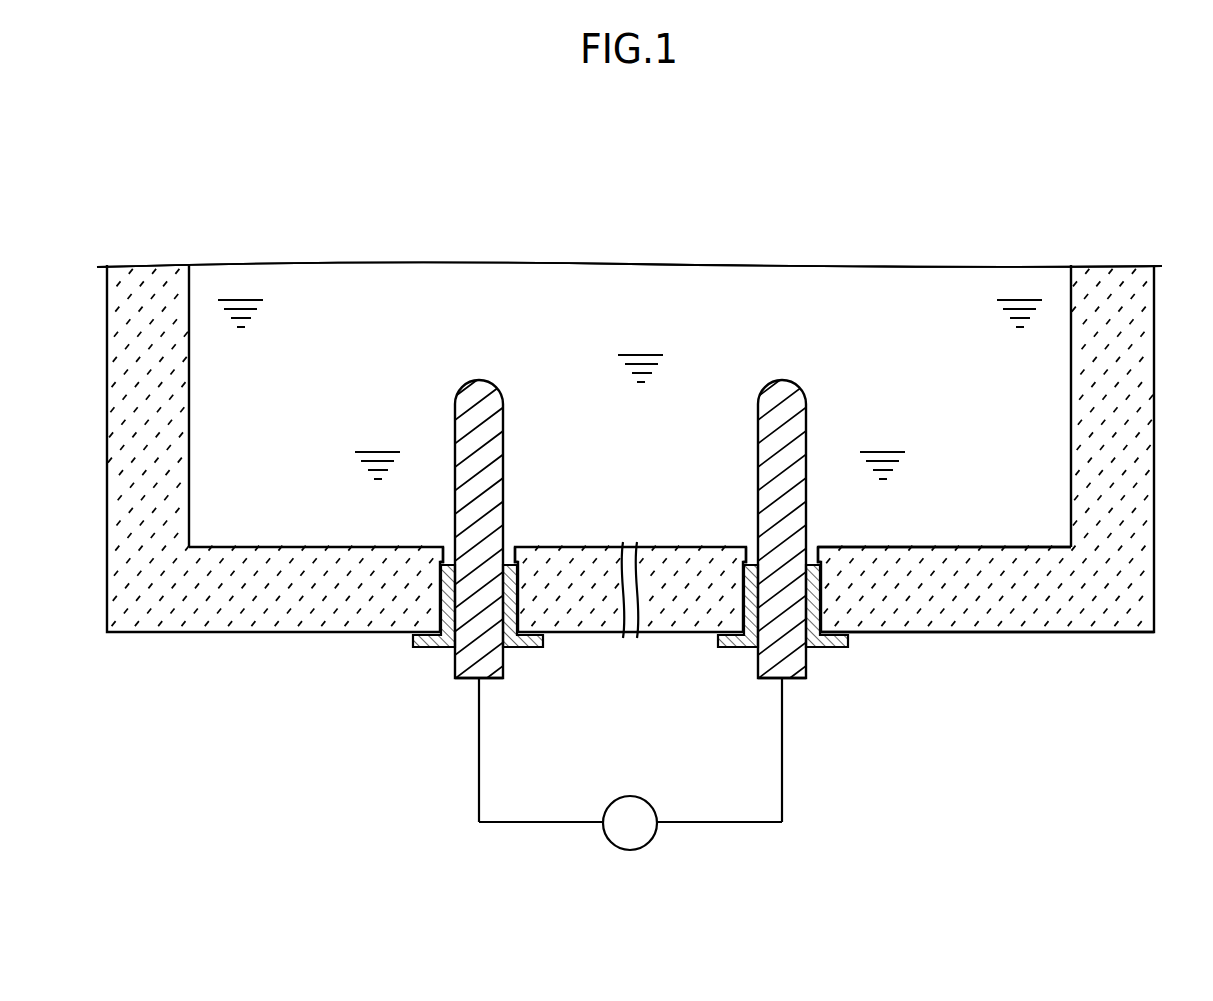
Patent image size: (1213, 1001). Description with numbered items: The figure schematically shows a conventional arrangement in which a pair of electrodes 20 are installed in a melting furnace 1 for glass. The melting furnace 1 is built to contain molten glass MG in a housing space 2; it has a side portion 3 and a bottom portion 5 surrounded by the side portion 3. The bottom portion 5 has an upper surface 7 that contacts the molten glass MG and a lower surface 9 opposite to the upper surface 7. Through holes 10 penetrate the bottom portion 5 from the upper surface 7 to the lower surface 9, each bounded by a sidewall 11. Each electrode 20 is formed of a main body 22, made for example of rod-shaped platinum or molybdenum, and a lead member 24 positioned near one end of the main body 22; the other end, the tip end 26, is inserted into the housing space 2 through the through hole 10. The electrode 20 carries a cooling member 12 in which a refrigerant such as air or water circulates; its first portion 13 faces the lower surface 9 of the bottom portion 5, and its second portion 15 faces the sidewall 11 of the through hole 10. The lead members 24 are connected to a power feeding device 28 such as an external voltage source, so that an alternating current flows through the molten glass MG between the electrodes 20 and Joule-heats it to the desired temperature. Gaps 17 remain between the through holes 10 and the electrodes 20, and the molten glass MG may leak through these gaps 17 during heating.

The melting furnace 1 is at (1112, 196).
The housing space 2 is at (660, 511).
The side portion 3 is at (1145, 408).
The bottom portion 5 is at (1145, 589).
The upper surface 7 is at (993, 543).
The lower surface 9 is at (987, 646).
The through hole 10 is at (630, 685).
The sidewall 11 is at (436, 557).
The cooling member 12 is at (630, 685).
The first portion 13 is at (418, 650).
The second portion 15 is at (440, 592).
The gap 17 is at (509, 535).
The electrode 20 is at (466, 694).
The main body 22 is at (506, 672).
The lead member 24 is at (546, 825).
The tip end 26 is at (630, 470).
The power feeding device 28 is at (630, 851).
The molten glass MG is at (620, 285).